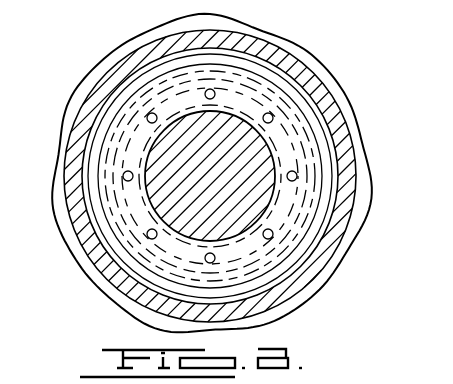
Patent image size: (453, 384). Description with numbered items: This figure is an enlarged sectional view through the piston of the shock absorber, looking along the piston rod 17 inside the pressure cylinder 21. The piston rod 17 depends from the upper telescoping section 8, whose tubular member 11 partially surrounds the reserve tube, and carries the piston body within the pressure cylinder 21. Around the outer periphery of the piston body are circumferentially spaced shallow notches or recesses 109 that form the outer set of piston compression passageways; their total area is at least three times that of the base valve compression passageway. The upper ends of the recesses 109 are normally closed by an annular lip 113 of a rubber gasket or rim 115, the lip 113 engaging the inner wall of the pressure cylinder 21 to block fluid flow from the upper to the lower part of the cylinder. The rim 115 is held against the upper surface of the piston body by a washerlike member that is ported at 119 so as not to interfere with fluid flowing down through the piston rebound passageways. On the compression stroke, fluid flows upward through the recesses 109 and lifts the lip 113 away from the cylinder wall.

The notches or recesses 109 is at (340, 213).
The annular lip 113 is at (88, 215).
The rubber gasket or rim 115 is at (108, 255).
The ports 119 is at (264, 113).
The pressure cylinder 21 is at (80, 164).
The piston rod 17 is at (214, 173).
The telescoping section 8 is at (0, 312).
The tubular member 11 is at (0, 354).